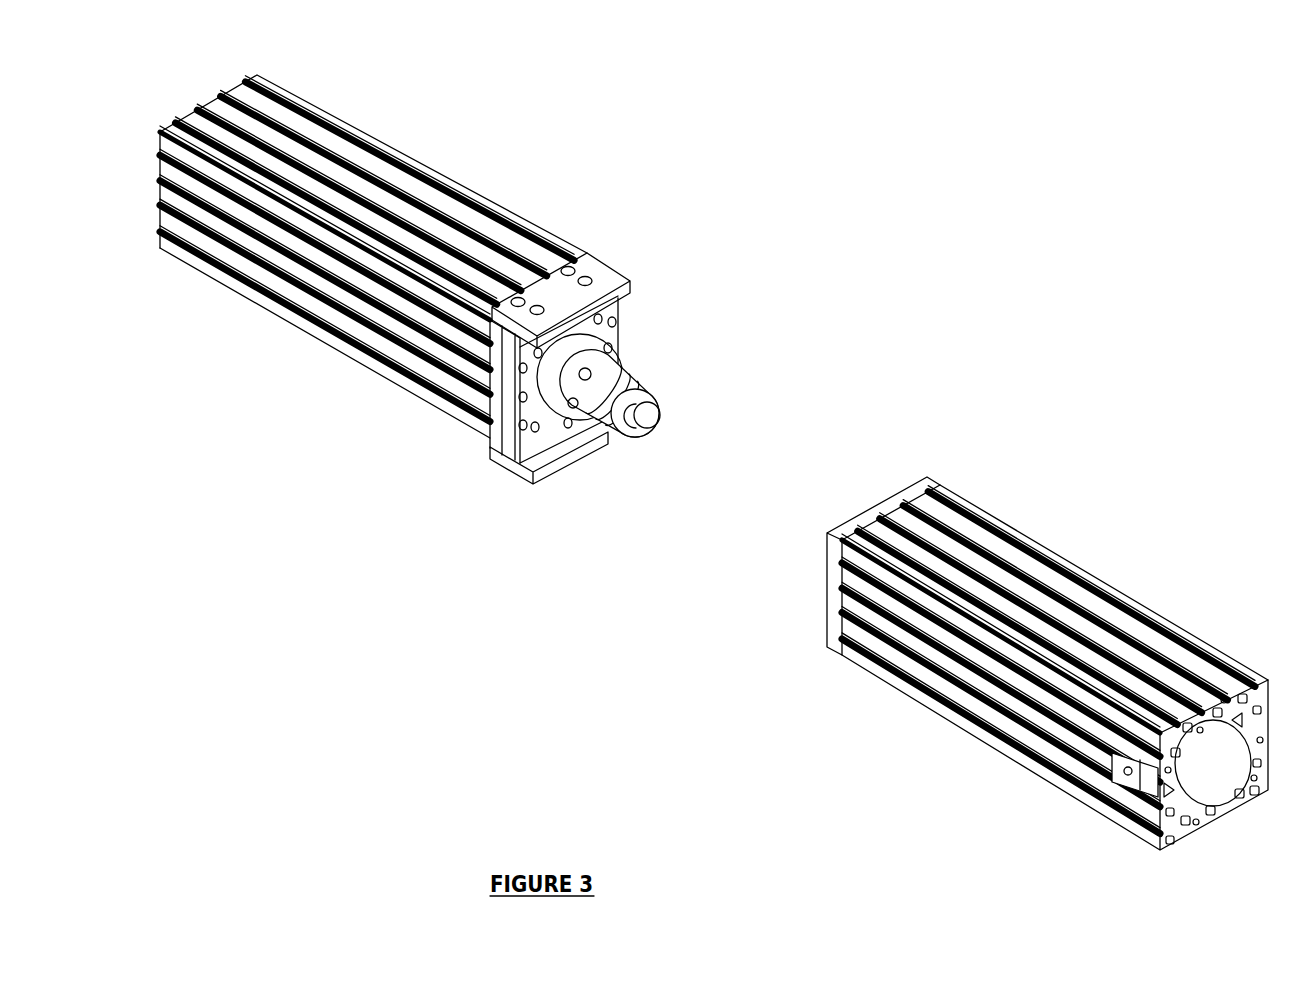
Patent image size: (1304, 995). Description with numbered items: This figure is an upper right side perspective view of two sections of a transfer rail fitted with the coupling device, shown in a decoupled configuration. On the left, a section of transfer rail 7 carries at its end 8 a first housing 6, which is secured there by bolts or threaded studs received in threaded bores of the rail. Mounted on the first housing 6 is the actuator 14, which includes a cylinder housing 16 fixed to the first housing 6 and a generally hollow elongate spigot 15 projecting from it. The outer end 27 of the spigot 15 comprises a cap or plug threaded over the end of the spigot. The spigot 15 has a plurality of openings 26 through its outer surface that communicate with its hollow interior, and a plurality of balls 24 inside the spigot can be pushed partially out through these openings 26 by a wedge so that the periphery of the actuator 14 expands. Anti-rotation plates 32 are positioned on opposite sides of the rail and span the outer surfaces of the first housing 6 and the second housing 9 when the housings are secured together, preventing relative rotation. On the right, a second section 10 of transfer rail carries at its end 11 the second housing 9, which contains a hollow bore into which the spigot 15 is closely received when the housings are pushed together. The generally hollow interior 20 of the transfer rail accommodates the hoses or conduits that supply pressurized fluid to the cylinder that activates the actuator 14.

The transfer rail 7 is at (480, 232).
The end of transfer rail 8 is at (485, 407).
The first housing 6 is at (487, 427).
The plates 32 is at (593, 270).
The cylinder housing 16 is at (603, 330).
The actuator 14 is at (612, 367).
The spigot 15 is at (650, 383).
The outer end of spigot 27 is at (589, 377).
The openings 26 is at (650, 438).
The balls 24 is at (575, 407).
The second housing 9 is at (930, 480).
The end of second section 11 is at (948, 487).
The second section of transfer rail 10 is at (1092, 597).
The hollow interior of transfer rail 20 is at (1199, 776).